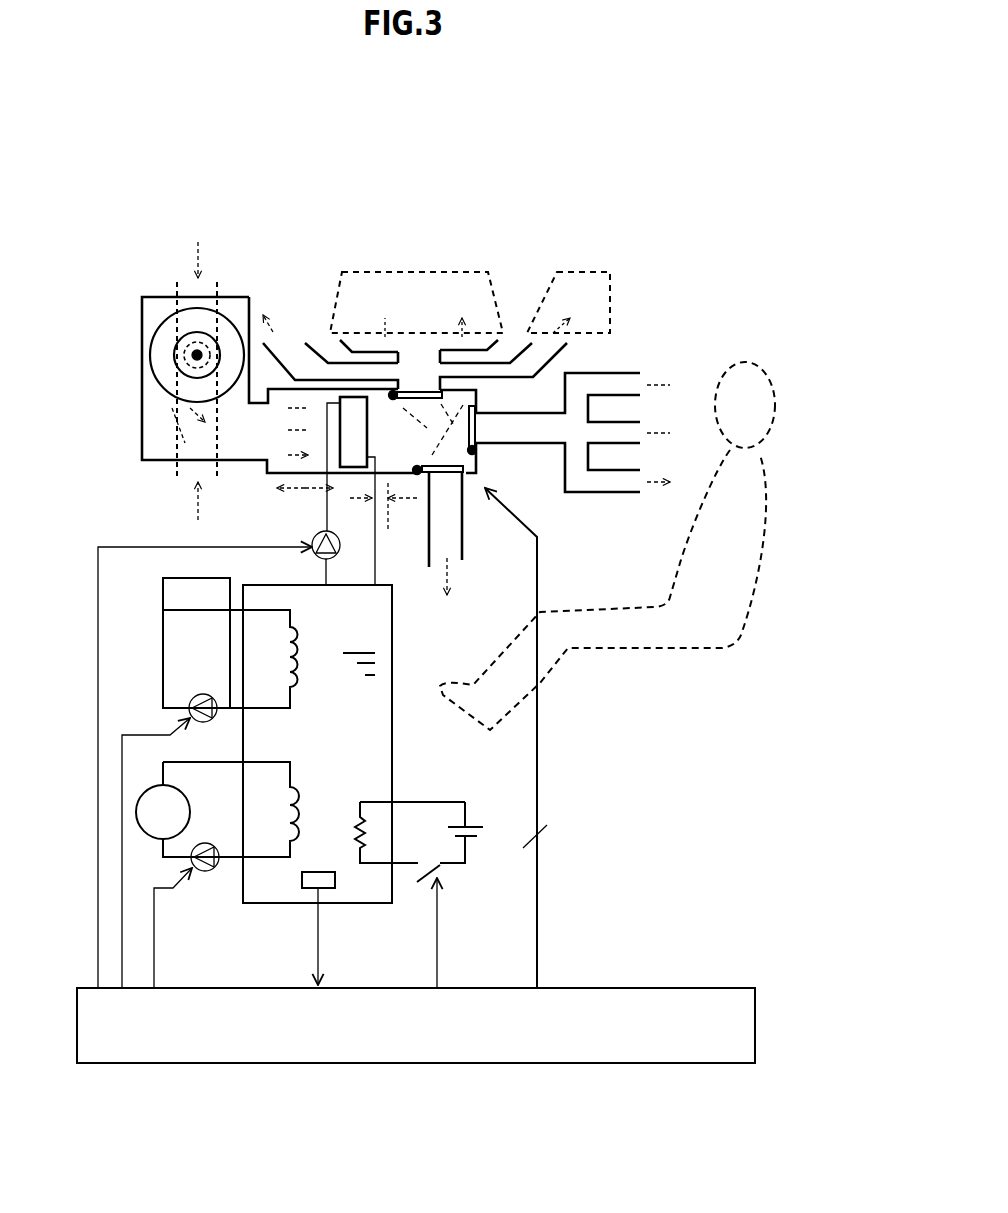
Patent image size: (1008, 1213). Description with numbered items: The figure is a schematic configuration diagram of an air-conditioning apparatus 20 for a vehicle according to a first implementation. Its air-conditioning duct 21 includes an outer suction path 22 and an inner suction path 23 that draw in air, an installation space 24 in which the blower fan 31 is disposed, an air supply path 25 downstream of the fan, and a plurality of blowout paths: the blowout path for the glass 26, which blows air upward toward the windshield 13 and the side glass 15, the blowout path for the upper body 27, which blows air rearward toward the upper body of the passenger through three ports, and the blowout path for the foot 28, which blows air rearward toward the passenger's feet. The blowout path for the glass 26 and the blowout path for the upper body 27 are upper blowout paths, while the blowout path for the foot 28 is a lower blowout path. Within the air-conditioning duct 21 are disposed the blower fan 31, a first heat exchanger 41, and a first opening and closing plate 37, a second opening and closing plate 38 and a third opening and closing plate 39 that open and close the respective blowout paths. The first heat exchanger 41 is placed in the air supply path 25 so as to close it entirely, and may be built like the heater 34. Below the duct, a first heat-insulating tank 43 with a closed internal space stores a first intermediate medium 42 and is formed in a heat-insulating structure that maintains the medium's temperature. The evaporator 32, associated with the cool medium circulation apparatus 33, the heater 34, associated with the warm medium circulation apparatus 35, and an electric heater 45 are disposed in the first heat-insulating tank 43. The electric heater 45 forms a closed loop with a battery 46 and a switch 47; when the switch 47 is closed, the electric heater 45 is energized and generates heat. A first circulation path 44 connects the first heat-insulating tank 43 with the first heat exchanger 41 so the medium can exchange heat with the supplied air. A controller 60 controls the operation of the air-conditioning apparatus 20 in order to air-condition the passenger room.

The windshield 13 is at (458, 288).
The side glass 15 is at (585, 287).
The air-conditioning apparatus for a vehicle 20 is at (660, 268).
The air-conditioning duct 21 is at (125, 401).
The outer suction path 22 is at (187, 283).
The inner suction path 23 is at (190, 477).
The installation space 24 is at (227, 438).
The air supply path 25 is at (300, 467).
The blowout path for the glass 26 is at (445, 382).
The blowout path for the upper body 27 is at (545, 445).
The blowout path for the foot 28 is at (462, 550).
The blower fan 31 is at (157, 353).
The evaporator 32 is at (297, 640).
The cool medium circulation apparatus 33 is at (163, 590).
The heater 34 is at (297, 795).
The warm medium circulation apparatus 35 is at (222, 872).
The first opening and closing plate 37 is at (430, 392).
The second opening and closing plate 38 is at (478, 427).
The third opening and closing plate 39 is at (433, 482).
The first heat exchanger 41 is at (351, 405).
The first intermediate medium 42 is at (380, 663).
The first heat-insulating tank 43 is at (393, 757).
The first circulation path 44 is at (375, 568).
The electric heater 45 is at (365, 837).
The battery 46 is at (470, 827).
The switch 47 is at (440, 870).
The controller 60 is at (645, 988).